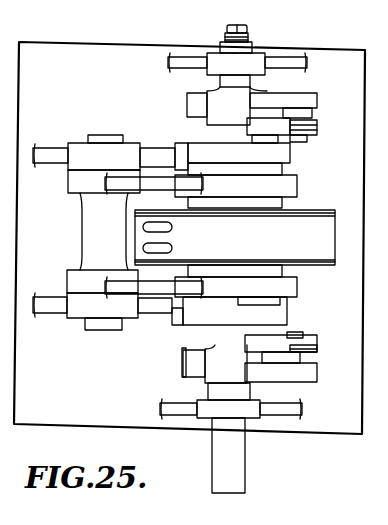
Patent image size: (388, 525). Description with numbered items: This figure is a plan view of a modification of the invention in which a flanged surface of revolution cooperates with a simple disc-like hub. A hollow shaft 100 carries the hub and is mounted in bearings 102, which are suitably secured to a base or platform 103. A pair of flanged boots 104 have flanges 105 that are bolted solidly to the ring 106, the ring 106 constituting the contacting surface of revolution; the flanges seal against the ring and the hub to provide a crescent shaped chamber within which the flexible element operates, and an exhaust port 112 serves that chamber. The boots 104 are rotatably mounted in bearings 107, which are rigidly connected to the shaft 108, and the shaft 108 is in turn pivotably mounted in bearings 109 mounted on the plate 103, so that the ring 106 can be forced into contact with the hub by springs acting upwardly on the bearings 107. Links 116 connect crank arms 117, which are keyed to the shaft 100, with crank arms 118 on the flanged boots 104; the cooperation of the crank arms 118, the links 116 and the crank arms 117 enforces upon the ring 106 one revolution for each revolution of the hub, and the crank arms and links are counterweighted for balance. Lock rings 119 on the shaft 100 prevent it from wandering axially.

The hollow shaft 100 is at (212, 444).
The bearings 102 is at (252, 60).
The base or platform 103 is at (322, 51).
The flanged boots 104 is at (284, 173).
The flanges 105 is at (307, 211).
The ring 106 is at (235, 237).
The bearings 107 is at (201, 235).
The shaft 108 is at (113, 114).
The bearings 109 is at (131, 150).
The exhaust port 112 is at (168, 247).
The links 116 is at (316, 126).
The crank arms 117 is at (293, 100).
The crank arms 118 is at (291, 151).
The lock rings 119 is at (207, 393).